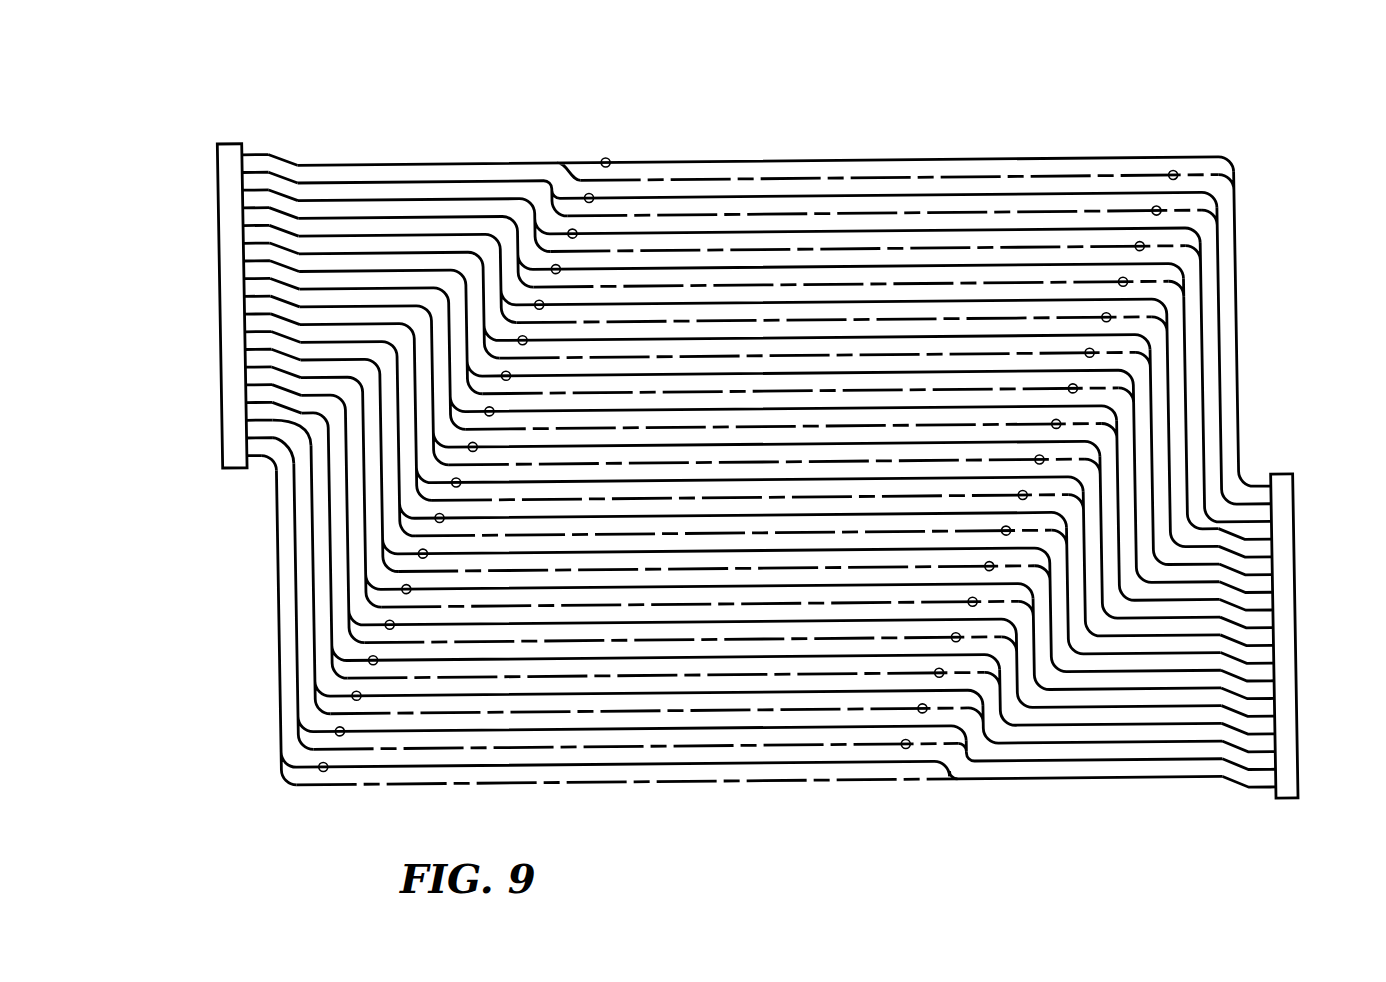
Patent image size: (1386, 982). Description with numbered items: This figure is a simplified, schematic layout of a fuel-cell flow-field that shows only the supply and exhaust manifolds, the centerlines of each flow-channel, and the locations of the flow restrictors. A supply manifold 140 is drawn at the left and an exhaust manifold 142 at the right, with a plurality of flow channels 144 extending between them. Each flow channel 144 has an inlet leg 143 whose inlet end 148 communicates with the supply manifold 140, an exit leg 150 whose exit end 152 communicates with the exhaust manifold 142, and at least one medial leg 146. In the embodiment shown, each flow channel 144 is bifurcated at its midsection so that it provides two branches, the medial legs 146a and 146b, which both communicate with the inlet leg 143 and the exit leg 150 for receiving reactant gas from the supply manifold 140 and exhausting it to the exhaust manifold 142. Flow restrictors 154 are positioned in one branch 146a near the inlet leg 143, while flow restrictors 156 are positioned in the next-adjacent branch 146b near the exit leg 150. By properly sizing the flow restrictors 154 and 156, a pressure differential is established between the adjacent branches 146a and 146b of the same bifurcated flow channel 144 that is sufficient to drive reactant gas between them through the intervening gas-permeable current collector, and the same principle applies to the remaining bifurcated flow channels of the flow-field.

The supply manifold 140 is at (232, 157).
The exhaust manifold 142 is at (1298, 557).
The inlet leg 143 is at (410, 197).
The flow channel 144 is at (757, 434).
The medial leg 146 is at (758, 450).
The medial leg branch 146a is at (878, 160).
The next-adjacent medial leg branch 146b is at (926, 177).
The inlet end 148 is at (200, 524).
The exit leg 150 is at (1225, 312).
The exit end 152 is at (1265, 641).
The flow restrictor 154 is at (577, 232).
The flow restrictor 156 is at (1178, 170).